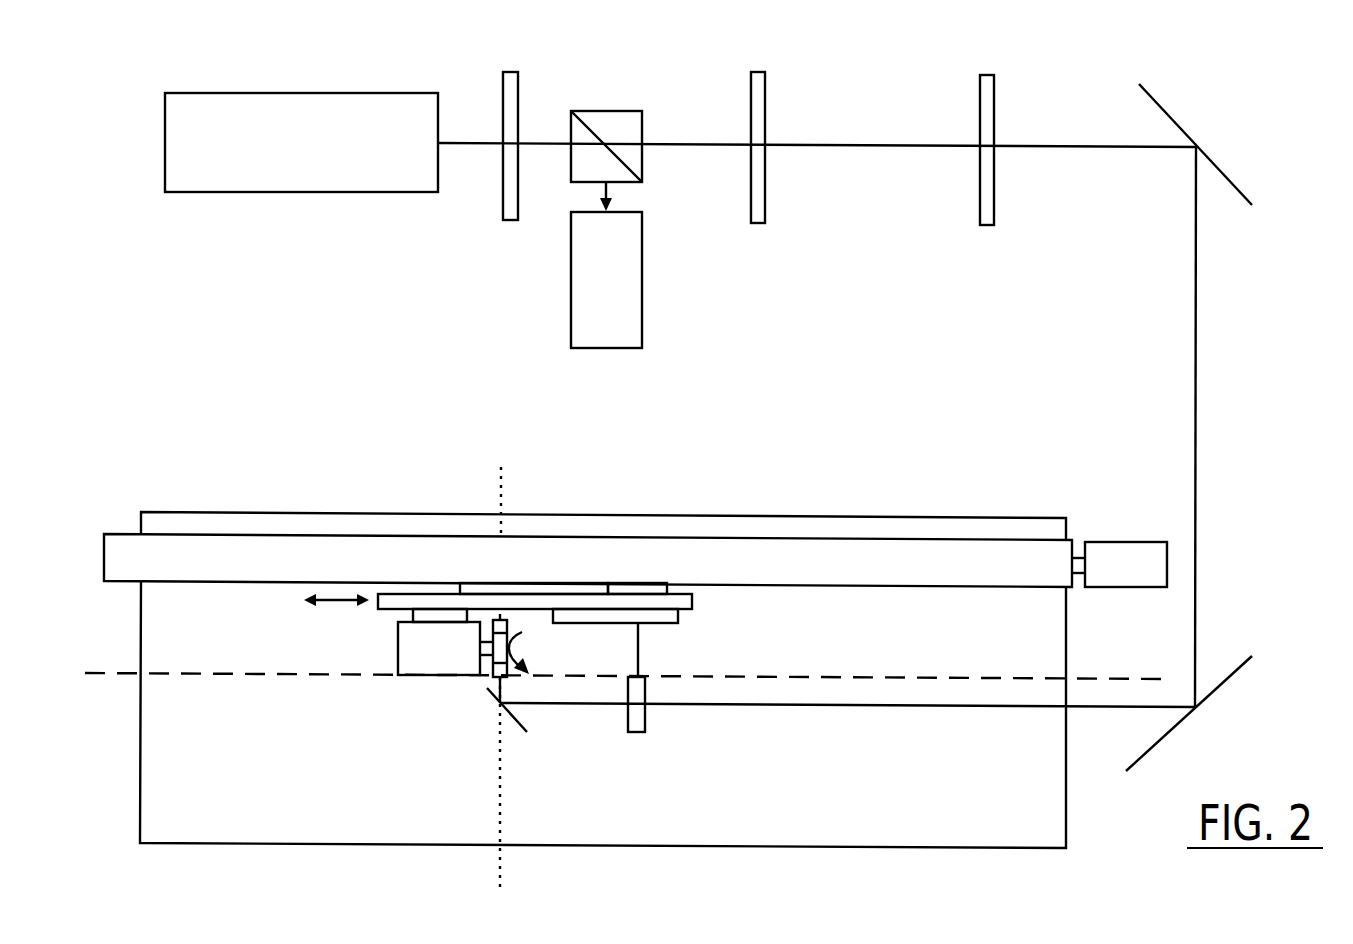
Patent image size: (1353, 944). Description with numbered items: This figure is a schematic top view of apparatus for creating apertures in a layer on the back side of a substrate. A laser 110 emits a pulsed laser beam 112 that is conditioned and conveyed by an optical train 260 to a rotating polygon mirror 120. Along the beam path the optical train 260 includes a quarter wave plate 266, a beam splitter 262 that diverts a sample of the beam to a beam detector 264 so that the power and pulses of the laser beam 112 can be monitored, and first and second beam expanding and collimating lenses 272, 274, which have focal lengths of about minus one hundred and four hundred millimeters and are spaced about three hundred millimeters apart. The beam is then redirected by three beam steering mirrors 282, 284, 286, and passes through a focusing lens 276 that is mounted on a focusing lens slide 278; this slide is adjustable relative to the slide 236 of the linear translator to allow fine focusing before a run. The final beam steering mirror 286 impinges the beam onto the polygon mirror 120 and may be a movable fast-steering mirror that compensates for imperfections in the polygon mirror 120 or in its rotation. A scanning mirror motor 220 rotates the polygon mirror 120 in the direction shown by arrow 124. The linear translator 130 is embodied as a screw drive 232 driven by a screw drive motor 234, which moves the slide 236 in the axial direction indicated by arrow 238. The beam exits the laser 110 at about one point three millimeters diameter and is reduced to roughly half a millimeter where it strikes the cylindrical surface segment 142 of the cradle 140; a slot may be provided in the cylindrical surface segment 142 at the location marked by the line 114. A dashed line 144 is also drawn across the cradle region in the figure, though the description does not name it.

The laser 110 is at (299, 93).
The pulsed laser beam 112 is at (472, 142).
The line 114 is at (507, 500).
The polygon mirror 120 is at (510, 632).
The arrow 124 is at (530, 656).
The linear translator 130 is at (1086, 522).
The cradle 140 is at (138, 776).
The cylindrical surface segment 142 is at (214, 816).
The liquid surface level 144 is at (253, 675).
The scanning mirror motor 220 is at (463, 663).
The screw drive 232 is at (757, 576).
The screw drive motor 234 is at (1148, 581).
The slide 236 is at (693, 601).
The arrow 238 is at (340, 603).
The optical train 260 is at (1262, 284).
The beam splitter 262 is at (605, 110).
The beam detector 264 is at (643, 279).
The quarter wave plate 266 is at (510, 72).
The first beam expanding and collimating lens 272 is at (757, 72).
The second beam expanding and collimating lens 274 is at (988, 75).
The focusing lens 276 is at (627, 722).
The focusing lens slide 278 is at (668, 626).
The beam steering mirror 282 is at (1228, 176).
The beam steering mirror 284 is at (1220, 685).
The final beam steering mirror 286 is at (488, 694).